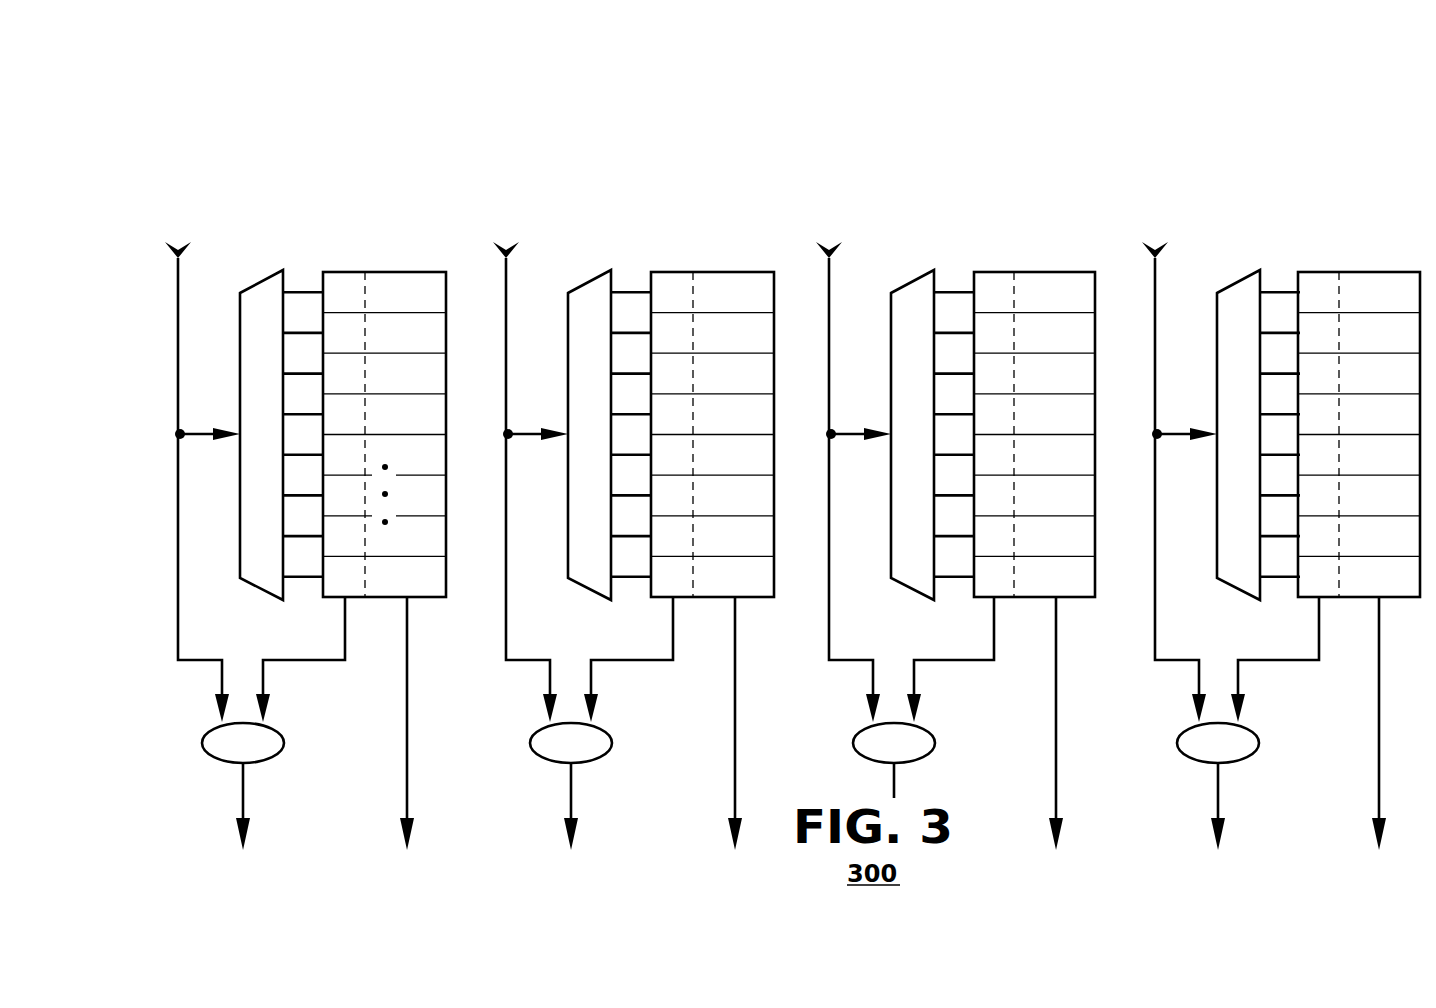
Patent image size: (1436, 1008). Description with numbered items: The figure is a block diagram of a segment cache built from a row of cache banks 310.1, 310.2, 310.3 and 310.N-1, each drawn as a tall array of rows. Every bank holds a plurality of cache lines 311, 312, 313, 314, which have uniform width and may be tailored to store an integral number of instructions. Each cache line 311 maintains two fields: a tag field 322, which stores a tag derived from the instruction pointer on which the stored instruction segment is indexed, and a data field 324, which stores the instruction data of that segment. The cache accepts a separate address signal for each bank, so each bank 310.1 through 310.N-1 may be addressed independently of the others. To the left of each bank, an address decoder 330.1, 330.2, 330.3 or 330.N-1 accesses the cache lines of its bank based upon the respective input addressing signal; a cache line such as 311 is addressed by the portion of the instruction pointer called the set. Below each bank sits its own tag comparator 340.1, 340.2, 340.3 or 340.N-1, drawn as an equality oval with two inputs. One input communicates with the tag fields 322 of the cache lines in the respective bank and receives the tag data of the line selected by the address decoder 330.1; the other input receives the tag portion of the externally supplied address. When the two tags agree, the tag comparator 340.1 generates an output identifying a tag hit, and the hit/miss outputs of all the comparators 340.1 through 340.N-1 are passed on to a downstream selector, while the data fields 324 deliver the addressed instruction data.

The cache bank 310.1 is at (289, 152).
The cache bank 310.2 is at (627, 480).
The cache bank 310.3 is at (948, 480).
The cache bank 310.N-1 is at (1255, 480).
The cache line 311 is at (407, 295).
The cache line 312 is at (407, 336).
The cache line 313 is at (407, 376).
The cache line 314 is at (407, 417).
The tag field 322 is at (322, 601).
The data field 324 is at (447, 578).
The address decoder 330.1 is at (252, 287).
The address decoder 330.2 is at (589, 416).
The address decoder 330.3 is at (911, 416).
The address decoder 330.N-1 is at (1235, 416).
The tag comparator 340.1 is at (201, 743).
The tag comparator 340.2 is at (546, 767).
The tag comparator 340.3 is at (868, 741).
The tag comparator 340.N-1 is at (1174, 767).